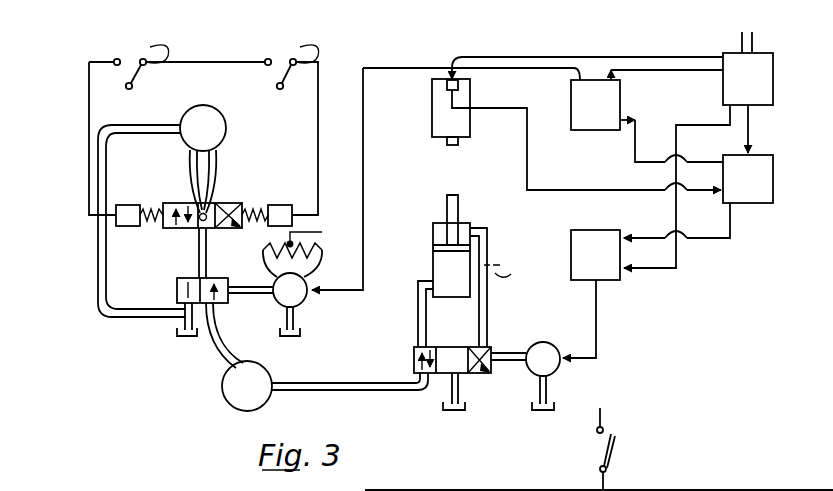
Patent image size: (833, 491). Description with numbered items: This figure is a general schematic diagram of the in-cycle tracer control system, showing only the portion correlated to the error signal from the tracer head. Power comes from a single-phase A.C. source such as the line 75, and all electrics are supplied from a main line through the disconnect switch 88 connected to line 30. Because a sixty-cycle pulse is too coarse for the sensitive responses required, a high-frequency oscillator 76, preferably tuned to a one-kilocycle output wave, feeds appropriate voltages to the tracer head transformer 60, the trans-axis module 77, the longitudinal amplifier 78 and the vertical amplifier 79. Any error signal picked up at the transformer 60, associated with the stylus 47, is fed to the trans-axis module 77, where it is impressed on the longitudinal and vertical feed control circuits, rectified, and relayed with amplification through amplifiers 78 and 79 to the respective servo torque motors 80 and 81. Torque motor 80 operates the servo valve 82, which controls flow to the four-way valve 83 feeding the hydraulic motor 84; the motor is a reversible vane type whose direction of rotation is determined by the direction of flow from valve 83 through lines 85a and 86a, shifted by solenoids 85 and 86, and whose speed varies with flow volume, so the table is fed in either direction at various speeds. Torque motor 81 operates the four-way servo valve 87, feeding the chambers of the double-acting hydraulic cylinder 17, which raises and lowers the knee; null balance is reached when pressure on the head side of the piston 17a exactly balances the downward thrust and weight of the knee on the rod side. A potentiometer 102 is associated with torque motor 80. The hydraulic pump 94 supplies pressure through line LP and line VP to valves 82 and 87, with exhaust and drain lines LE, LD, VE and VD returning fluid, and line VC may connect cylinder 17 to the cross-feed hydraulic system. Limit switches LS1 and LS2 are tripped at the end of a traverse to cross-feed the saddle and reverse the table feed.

The double-acting hydraulic cylinder 17 is at (432, 263).
The piston 17a is at (462, 236).
The power supply line 30 is at (770, 490).
The stylus 47 is at (458, 142).
The tracer head transformer 60 is at (458, 85).
The line 75 is at (742, 40).
The high-frequency oscillator 76 is at (748, 53).
The trans-axis module 77 is at (773, 166).
The longitudinal amplifier 78 is at (620, 98).
The vertical amplifier 79 is at (610, 280).
The servo torque motor 80 is at (300, 305).
The servo torque motor 81 is at (560, 370).
The servo valve 82 is at (180, 281).
The 4-way valve 83 is at (197, 229).
The hydraulic motor 84 is at (226, 122).
The solenoid 85 is at (285, 205).
The line 85a is at (220, 176).
The solenoid 86 is at (122, 205).
The line 86a is at (188, 176).
The 4-way servo valve 87 is at (478, 374).
The disconnect switch 88 is at (598, 440).
The hydraulic pump 94 is at (260, 398).
The potentiometer 102 is at (320, 243).
The limit switch LS1 is at (290, 65).
The limit switch LS2 is at (140, 65).
The exhaust line LE is at (178, 330).
The drain line LD is at (295, 320).
The pressure line LP is at (227, 348).
The pressure line VP is at (373, 392).
The exhaust line VE is at (457, 393).
The drain line VD is at (548, 393).
The line VC is at (503, 267).